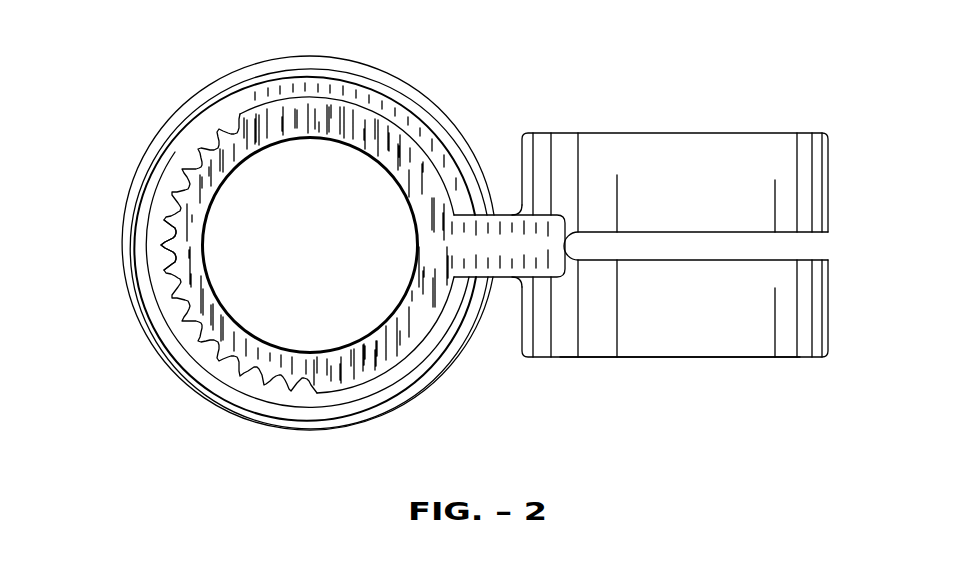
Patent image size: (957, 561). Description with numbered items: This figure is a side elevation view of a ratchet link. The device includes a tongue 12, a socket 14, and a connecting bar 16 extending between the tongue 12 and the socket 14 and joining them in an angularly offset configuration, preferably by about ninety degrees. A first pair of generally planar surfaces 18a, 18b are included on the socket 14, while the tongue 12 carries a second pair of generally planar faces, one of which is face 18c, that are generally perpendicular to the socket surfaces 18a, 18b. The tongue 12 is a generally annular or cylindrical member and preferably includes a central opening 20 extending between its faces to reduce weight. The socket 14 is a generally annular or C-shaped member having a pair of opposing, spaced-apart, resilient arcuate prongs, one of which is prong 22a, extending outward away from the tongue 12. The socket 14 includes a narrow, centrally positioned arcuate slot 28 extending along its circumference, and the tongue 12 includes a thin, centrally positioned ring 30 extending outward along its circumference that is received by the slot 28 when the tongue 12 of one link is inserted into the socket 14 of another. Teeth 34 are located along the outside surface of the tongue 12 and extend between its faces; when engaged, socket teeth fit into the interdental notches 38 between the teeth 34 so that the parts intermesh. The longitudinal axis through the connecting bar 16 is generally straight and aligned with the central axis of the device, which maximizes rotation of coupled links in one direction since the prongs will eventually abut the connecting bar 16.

The tongue 12 is at (128, 119).
The socket 14 is at (843, 103).
The connecting bar 16 is at (499, 252).
The planar surface 18a is at (560, 133).
The planar surface 18b is at (720, 358).
The planar face 18c is at (245, 113).
The central opening 20 is at (263, 334).
The arcuate prong 22a is at (793, 147).
The arcuate slot 28 is at (816, 252).
The ring 30 is at (290, 60).
The teeth 34 is at (160, 230).
The interdental notches 38 is at (162, 271).